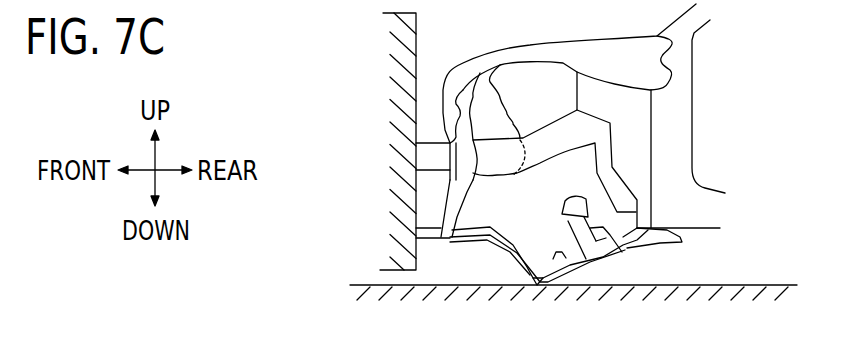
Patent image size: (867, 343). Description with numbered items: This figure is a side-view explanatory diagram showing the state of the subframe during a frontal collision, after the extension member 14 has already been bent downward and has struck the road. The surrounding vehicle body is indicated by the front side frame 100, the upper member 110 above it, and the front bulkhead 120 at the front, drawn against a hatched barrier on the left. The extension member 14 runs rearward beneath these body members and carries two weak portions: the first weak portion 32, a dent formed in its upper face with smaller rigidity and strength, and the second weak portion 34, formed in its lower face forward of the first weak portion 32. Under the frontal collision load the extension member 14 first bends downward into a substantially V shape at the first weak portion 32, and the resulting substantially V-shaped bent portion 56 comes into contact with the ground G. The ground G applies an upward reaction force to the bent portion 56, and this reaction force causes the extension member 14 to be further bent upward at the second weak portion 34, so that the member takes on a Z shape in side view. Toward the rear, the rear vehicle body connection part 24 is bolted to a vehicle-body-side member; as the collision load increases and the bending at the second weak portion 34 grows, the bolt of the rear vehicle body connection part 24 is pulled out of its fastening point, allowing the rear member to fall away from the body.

The upper member 110 is at (498, 49).
The front side frame 100 is at (548, 126).
The front bulkhead 120 is at (438, 207).
The extension member 14 is at (490, 227).
The second weak portion 34 is at (512, 259).
The first weak portion 32 is at (540, 270).
The substantially V-shaped bent portion 56 is at (538, 286).
The rear vehicle body connection part 24 is at (658, 248).
The ground G is at (770, 285).